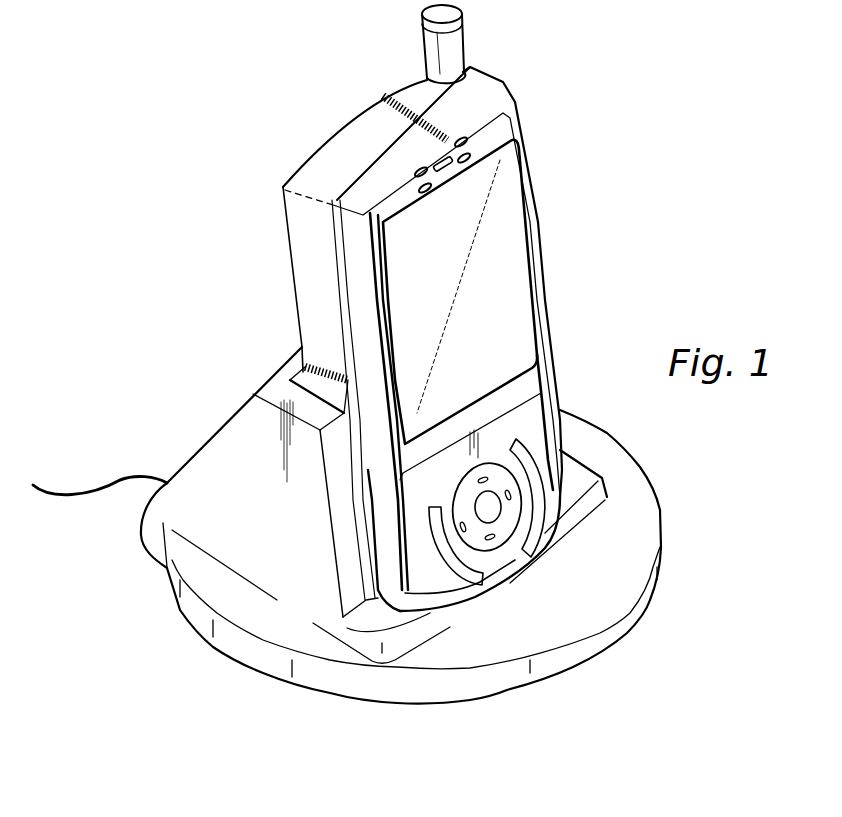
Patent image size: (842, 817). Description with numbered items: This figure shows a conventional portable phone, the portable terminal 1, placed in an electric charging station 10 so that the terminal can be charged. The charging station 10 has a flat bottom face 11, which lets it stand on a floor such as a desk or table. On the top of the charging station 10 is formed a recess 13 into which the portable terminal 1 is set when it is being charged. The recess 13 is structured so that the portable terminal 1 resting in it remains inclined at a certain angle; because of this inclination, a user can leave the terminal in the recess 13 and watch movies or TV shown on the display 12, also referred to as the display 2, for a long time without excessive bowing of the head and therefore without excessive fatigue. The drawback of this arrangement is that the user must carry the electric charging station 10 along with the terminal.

The portable terminal 1 is at (546, 163).
The display 2 is at (510, 253).
The electric charging station 10 is at (248, 370).
The bottom face 11 is at (577, 620).
The display 12 is at (323, 387).
The recess 13 is at (363, 603).